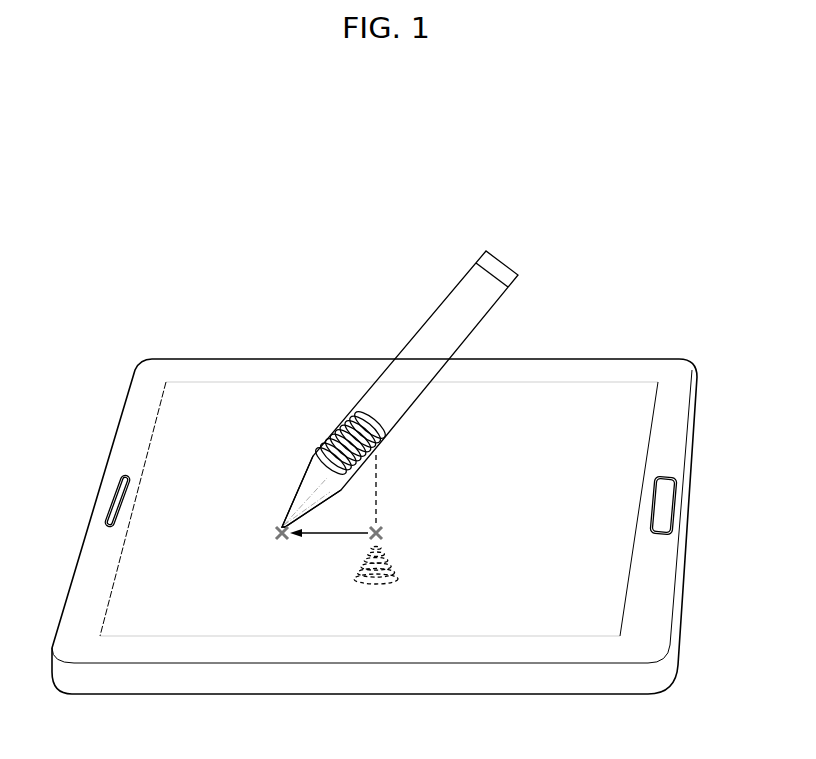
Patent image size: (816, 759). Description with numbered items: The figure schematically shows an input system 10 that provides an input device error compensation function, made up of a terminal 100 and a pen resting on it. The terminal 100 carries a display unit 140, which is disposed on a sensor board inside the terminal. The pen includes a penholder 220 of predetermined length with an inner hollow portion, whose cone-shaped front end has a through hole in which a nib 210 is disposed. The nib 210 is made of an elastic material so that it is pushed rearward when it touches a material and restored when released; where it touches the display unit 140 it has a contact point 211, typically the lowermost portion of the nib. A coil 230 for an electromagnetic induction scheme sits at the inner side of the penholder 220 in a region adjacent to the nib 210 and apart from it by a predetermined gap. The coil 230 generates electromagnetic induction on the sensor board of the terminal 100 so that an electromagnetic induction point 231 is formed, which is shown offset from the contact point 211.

The input system 10 is at (377, 209).
The terminal 100 is at (203, 336).
The display unit 140 is at (580, 406).
The nib 210 is at (270, 509).
The contact point 211 is at (275, 556).
The penholder 220 is at (329, 408).
The coil 230 is at (367, 409).
The electromagnetic induction point 231 is at (397, 513).